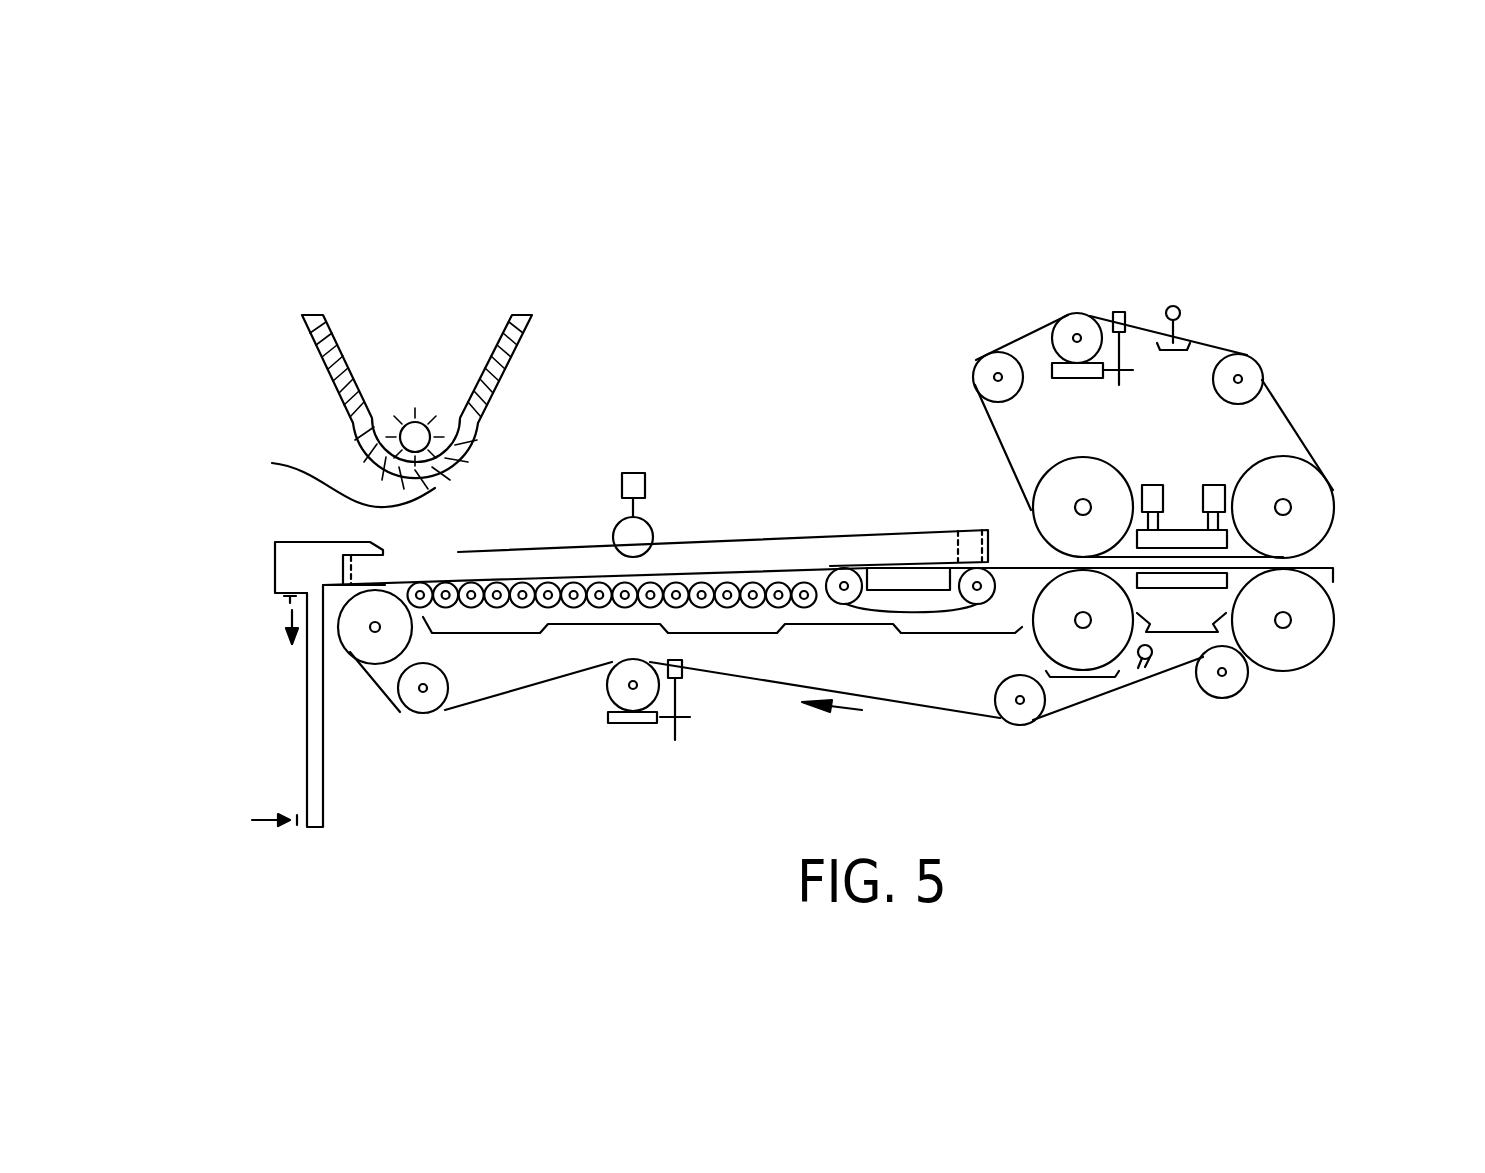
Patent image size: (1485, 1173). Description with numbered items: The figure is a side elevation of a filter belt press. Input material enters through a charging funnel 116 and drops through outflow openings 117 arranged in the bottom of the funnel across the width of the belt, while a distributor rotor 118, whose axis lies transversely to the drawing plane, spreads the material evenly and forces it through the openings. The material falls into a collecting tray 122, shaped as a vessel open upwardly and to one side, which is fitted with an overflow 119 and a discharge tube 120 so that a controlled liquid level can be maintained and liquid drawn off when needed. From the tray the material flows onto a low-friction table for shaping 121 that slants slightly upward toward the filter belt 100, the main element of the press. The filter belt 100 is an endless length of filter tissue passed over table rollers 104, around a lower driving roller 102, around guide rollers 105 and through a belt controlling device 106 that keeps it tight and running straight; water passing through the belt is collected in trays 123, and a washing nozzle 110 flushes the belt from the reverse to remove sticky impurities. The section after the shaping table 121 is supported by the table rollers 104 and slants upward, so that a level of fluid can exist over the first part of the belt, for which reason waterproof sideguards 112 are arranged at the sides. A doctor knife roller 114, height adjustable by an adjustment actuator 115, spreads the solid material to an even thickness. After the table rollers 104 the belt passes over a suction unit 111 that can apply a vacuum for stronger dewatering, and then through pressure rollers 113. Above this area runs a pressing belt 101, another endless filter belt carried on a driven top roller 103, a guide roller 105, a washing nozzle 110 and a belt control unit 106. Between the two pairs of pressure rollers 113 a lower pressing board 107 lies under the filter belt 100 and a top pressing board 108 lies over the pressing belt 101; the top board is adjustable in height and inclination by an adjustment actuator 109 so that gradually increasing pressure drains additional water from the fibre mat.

The filter belt 100 is at (548, 685).
The pressing belt 101 is at (1282, 402).
The lower driving roller 102 is at (1318, 635).
The driven top roller 103 is at (1313, 497).
The table rollers 104 is at (470, 592).
The guide rollers 105 is at (417, 714).
The belt controlling device 106 is at (625, 708).
The lower pressing board 107 is at (1183, 588).
The top pressing board 108 is at (1213, 540).
The adjustment actuator 109 is at (1222, 483).
The washing nozzle 110 is at (1170, 306).
The suction unit 111 is at (897, 578).
The sideguards 112 is at (727, 540).
The pressure rollers 113 is at (1043, 638).
The doctor knife roller 114 is at (620, 524).
The adjustment actuator 115 is at (633, 473).
The charging funnel 116 is at (302, 347).
The outflow openings 117 is at (383, 476).
The distributor rotor 118 is at (417, 432).
The overflow 119 is at (283, 598).
The discharge tube 120 is at (317, 737).
The table for shaping 121 is at (343, 585).
The collecting tray 122 is at (287, 553).
The trays 123 is at (722, 634).